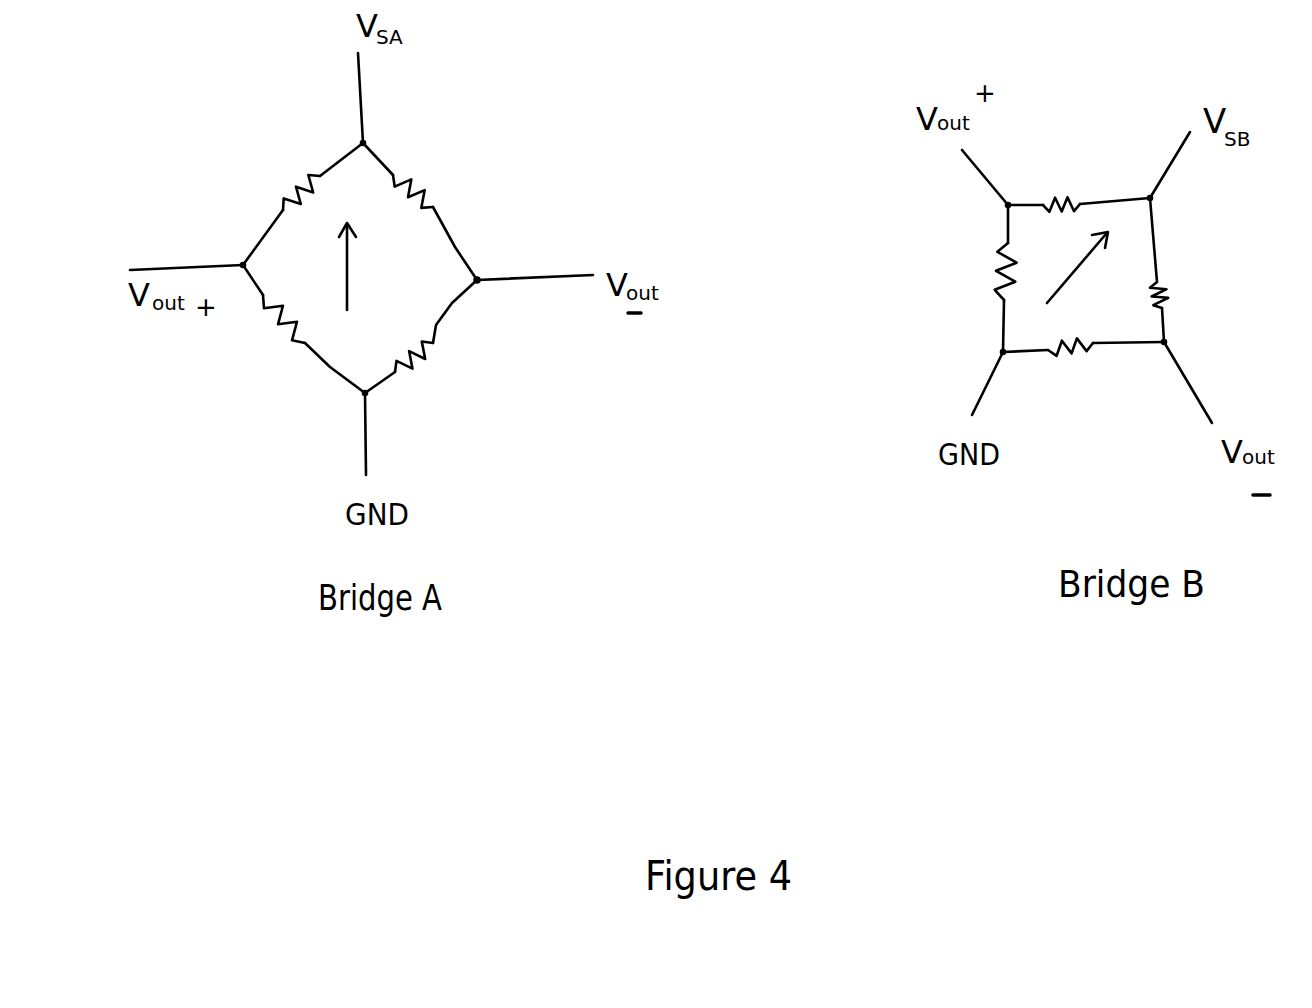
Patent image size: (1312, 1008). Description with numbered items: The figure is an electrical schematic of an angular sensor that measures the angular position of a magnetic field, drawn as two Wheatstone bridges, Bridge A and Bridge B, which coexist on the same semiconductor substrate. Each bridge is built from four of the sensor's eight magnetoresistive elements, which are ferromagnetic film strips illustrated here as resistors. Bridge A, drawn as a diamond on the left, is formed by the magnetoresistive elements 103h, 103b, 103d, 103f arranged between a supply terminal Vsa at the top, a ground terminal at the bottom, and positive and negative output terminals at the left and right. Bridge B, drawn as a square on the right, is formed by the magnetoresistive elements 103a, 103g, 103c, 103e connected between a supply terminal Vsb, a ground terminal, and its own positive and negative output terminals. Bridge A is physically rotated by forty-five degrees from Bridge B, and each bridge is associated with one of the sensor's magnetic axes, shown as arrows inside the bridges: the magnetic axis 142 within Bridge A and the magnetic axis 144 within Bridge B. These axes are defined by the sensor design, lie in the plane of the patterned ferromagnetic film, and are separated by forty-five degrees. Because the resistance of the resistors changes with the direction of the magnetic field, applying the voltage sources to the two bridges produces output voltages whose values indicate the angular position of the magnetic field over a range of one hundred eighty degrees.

The magnetoresistive element 103h is at (303, 204).
The magnetoresistive element 103b is at (431, 211).
The magnetoresistive element 103d is at (421, 336).
The magnetoresistive element 103f is at (304, 329).
The magnetic axis 142 is at (376, 266).
The magnetoresistive element 103a is at (1079, 194).
The magnetoresistive element 103g is at (985, 278).
The magnetoresistive element 103c is at (1190, 270).
The magnetoresistive element 103e is at (1083, 347).
The magnetic axis 144 is at (1083, 267).